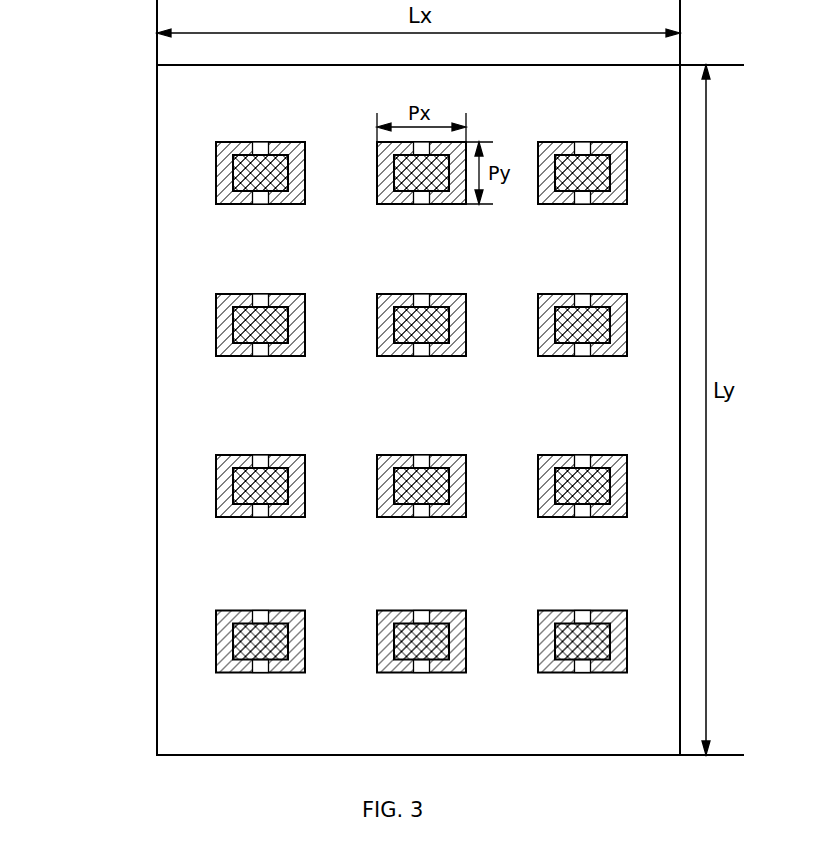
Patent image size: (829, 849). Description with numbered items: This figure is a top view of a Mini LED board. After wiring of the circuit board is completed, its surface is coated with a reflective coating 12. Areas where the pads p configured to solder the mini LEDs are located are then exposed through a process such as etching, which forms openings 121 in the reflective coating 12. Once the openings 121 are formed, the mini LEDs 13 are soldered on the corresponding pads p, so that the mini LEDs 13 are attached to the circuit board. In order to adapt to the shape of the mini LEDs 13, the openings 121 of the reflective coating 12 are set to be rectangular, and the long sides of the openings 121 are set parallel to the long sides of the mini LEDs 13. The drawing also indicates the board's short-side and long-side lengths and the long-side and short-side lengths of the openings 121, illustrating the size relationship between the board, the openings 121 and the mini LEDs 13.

The reflective coating 12 is at (193, 303).
The openings 121 is at (216, 185).
The pads p is at (217, 355).
The mini LEDs 13 is at (217, 517).